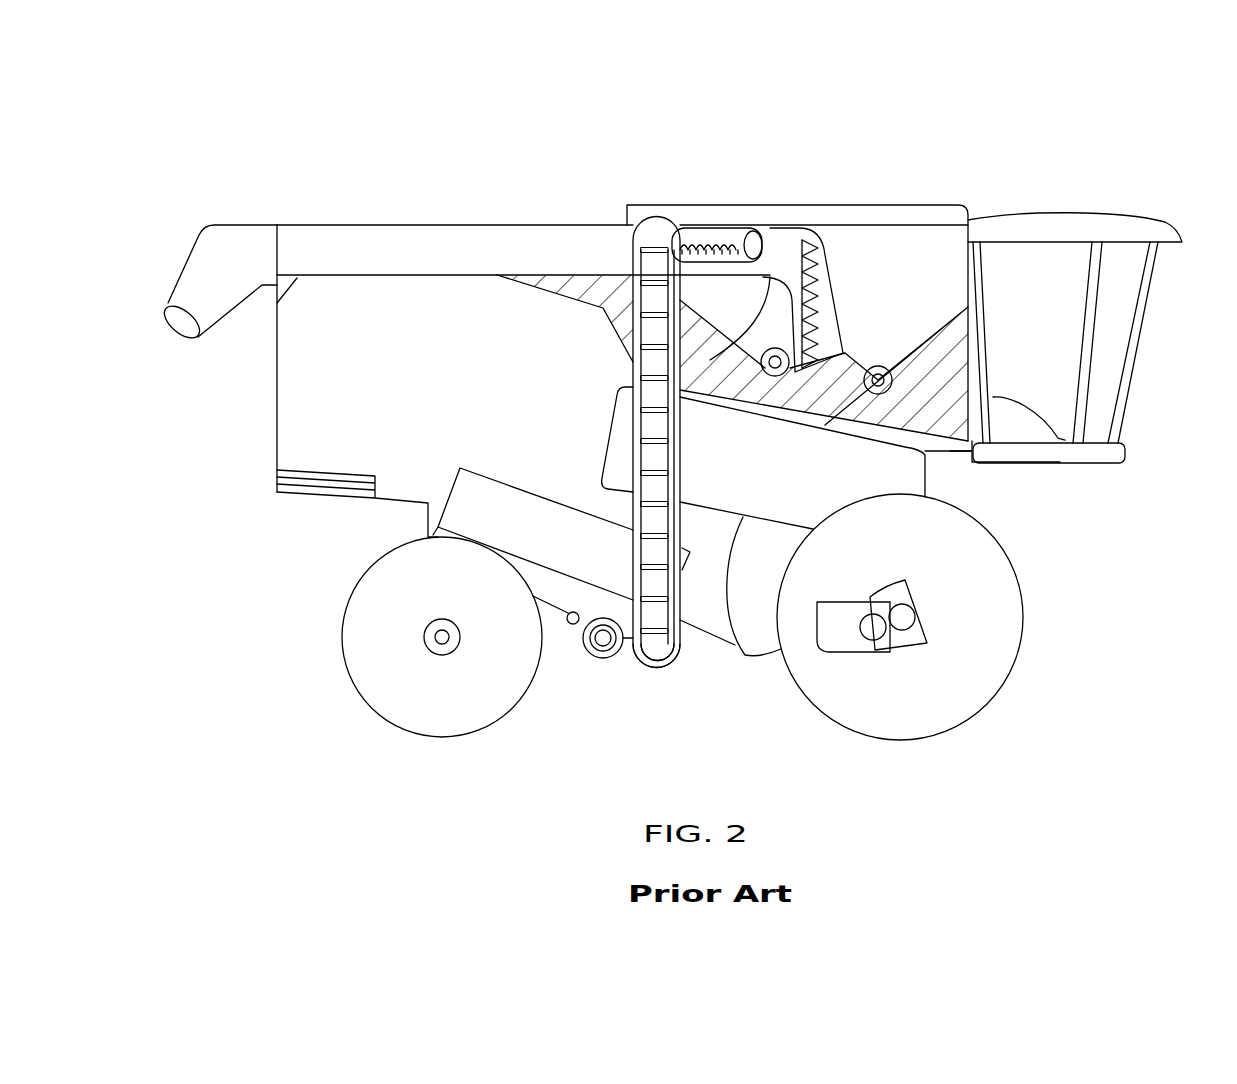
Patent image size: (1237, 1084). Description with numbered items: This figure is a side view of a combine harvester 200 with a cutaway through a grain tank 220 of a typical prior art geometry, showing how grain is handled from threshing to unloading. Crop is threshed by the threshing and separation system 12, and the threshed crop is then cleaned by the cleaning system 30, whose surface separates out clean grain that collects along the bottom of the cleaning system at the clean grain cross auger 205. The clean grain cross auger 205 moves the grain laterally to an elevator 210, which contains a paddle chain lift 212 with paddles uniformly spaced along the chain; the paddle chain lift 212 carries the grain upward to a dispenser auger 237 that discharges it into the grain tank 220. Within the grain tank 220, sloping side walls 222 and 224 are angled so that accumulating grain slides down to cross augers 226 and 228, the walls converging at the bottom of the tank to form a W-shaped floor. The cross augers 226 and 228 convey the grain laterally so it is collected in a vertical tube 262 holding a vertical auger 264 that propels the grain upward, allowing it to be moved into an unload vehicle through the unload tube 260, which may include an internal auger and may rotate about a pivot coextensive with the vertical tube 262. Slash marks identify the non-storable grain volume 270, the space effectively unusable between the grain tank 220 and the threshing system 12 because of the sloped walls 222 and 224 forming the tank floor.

The combine harvester 200 is at (1010, 708).
The unload tube 260 is at (325, 240).
The elevator 210 is at (573, 278).
The paddle chain lift 212 is at (638, 250).
The clean grain cross auger 205 is at (665, 672).
The cleaning system 30 is at (467, 512).
The dispenser auger 237 is at (717, 237).
The sloping side wall 222 is at (768, 277).
The vertical auger 264 is at (800, 228).
The vertical tube 262 is at (827, 270).
The sloping side wall 224 is at (928, 352).
The cross auger 226 is at (778, 378).
The non-storable grain volume 270 is at (943, 415).
The grain tank 220 is at (935, 250).
The cross auger 228 is at (993, 350).
The threshing and separation system 12 is at (755, 498).